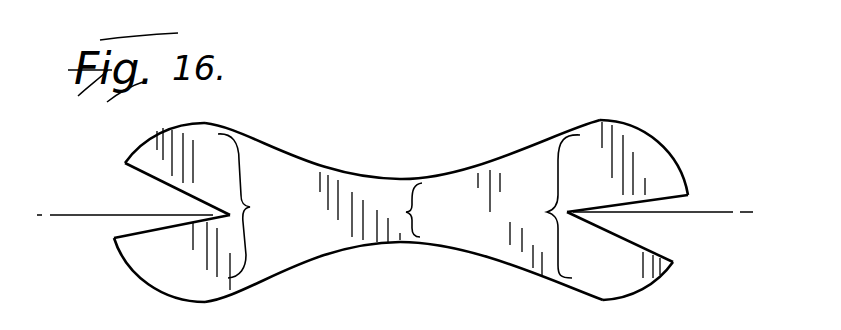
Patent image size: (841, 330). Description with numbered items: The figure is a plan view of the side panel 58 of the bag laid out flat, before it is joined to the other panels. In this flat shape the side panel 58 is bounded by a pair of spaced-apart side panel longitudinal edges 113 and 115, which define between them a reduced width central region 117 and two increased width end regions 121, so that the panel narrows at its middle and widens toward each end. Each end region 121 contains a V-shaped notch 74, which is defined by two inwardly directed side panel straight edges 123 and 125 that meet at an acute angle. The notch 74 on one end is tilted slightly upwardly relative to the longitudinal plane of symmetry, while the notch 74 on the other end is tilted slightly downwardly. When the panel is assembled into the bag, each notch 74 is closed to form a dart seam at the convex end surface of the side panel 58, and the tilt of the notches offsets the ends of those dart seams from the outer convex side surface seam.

The side panel 58 is at (537, 134).
The V-shaped notch 74 is at (187, 206).
The side panel longitudinal edge 113 is at (330, 172).
The side panel longitudinal edge 115 is at (267, 278).
The reduced width central region 117 is at (431, 222).
The increased width end region 121 is at (399, 206).
The side panel straight edge 123 is at (130, 229).
The side panel straight edge 125 is at (137, 175).